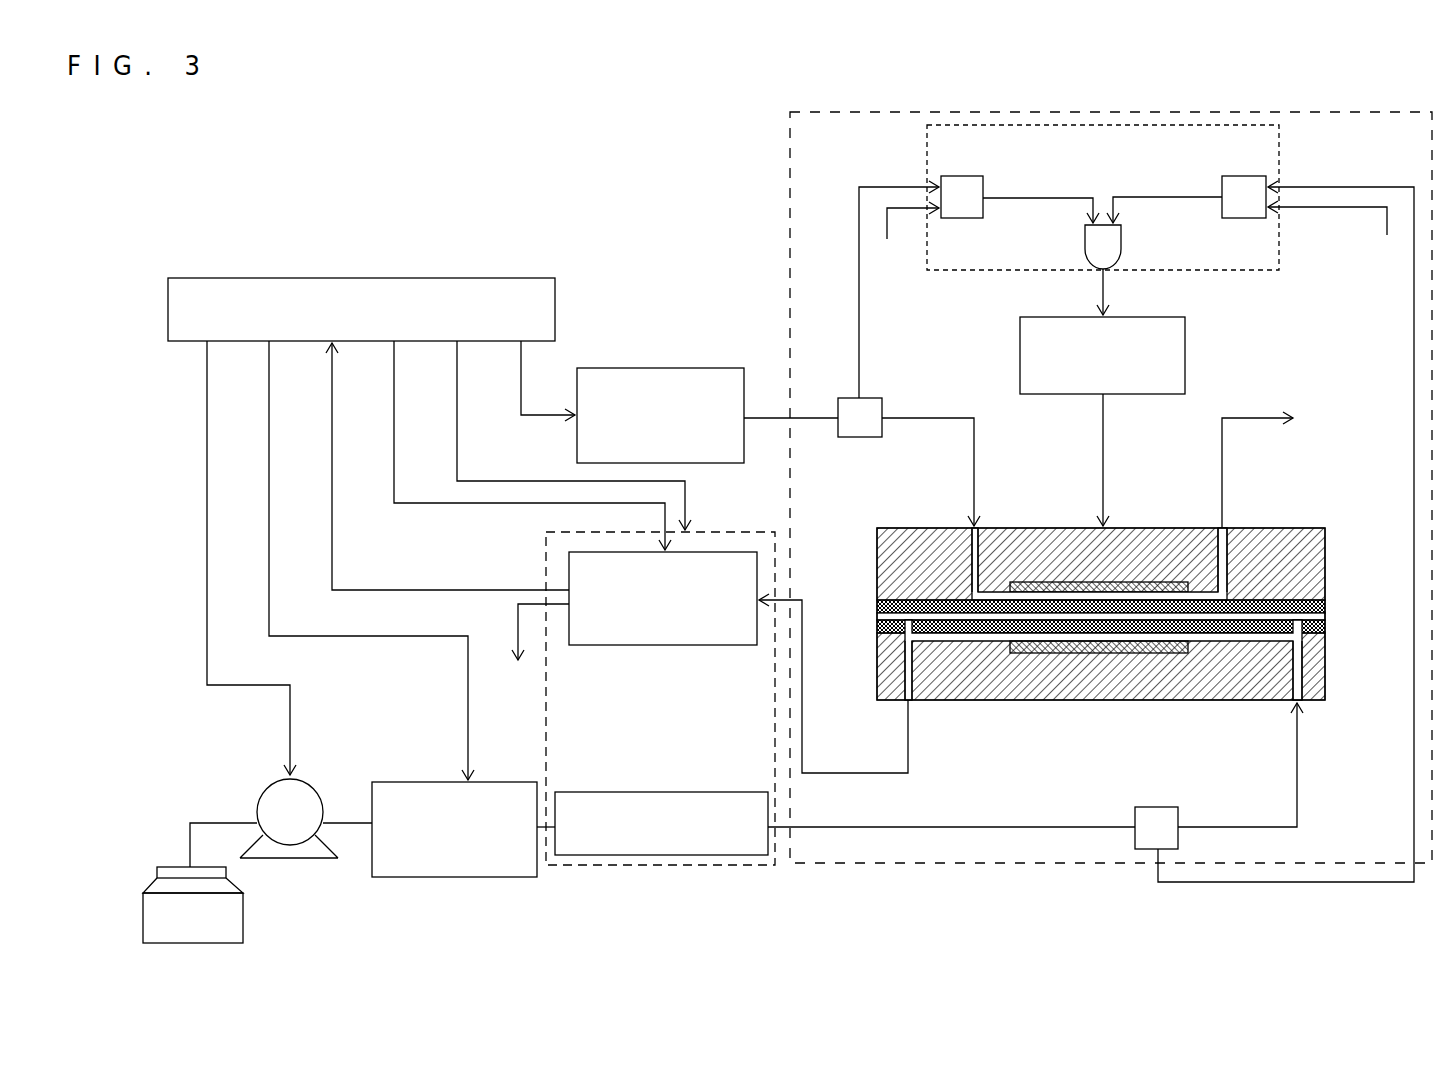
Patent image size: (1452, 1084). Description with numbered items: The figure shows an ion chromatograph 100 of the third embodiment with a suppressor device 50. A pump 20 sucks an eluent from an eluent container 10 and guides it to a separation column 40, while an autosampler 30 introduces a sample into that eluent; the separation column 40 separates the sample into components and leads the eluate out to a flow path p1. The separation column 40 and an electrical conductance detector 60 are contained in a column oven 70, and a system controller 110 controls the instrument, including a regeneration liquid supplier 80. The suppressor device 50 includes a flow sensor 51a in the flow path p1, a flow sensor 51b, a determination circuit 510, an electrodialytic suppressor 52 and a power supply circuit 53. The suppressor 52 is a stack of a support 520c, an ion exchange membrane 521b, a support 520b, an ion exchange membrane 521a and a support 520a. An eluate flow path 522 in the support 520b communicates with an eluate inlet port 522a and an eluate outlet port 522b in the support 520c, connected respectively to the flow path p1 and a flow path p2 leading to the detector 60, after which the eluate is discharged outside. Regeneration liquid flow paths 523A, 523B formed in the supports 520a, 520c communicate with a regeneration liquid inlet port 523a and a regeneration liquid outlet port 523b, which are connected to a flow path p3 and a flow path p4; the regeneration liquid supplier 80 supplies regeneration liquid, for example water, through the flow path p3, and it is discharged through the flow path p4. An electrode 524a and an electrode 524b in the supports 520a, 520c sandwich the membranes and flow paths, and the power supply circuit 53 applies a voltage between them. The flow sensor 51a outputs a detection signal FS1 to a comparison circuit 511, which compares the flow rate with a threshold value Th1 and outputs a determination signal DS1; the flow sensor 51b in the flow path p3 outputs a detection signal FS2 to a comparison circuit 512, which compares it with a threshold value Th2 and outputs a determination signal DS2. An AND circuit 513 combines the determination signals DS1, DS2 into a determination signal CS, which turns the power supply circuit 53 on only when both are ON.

The ion chromatograph 100 is at (176, 144).
The eluent container 10 is at (175, 866).
The pump 20 is at (303, 779).
The autosampler 30 is at (493, 781).
The separation column 40 is at (633, 792).
The suppressor device 50 is at (813, 104).
The flow sensor 51a is at (1241, 514).
The flow sensor 51b is at (872, 292).
The suppressor 52 is at (1103, 619).
The power supply circuit 53 is at (1185, 333).
The electrical conductance detector 60 is at (690, 645).
The column oven 70 is at (716, 530).
The regeneration liquid supplier 80 is at (710, 368).
The system controller 110 is at (168, 316).
The determination circuit 510 is at (1124, 216).
The comparison circuit 511 is at (1235, 176).
The comparison circuit 512 is at (972, 176).
The AND circuit 513 is at (1120, 258).
The support 520a is at (880, 590).
The support 520b is at (880, 617).
The support 520c is at (880, 640).
The ion exchange membrane 521a is at (1325, 608).
The ion exchange membrane 521b is at (1325, 628).
The eluate flow path 522 is at (1037, 618).
The eluate inlet port 522a is at (1305, 700).
The eluate outlet port 522b is at (908, 692).
The regeneration liquid inlet port 523a is at (975, 548).
The regeneration liquid flow path 523A is at (1180, 600).
The regeneration liquid outlet port 523b is at (1217, 548).
The regeneration liquid flow path 523B is at (1182, 637).
The electrode 524a is at (1087, 582).
The electrode 524b is at (1093, 700).
The detection signal FS1 is at (1286, 514).
The detection signal FS2 is at (852, 398).
The threshold value Th1 is at (1337, 239).
The threshold value Th2 is at (904, 240).
The determination signal DS1 is at (1167, 192).
The determination signal DS2 is at (1038, 192).
The determination signal CS is at (1124, 293).
The flow path p1 is at (1300, 802).
The flow path p2 is at (870, 775).
The flow path p3 is at (925, 418).
The flow path p4 is at (1268, 418).